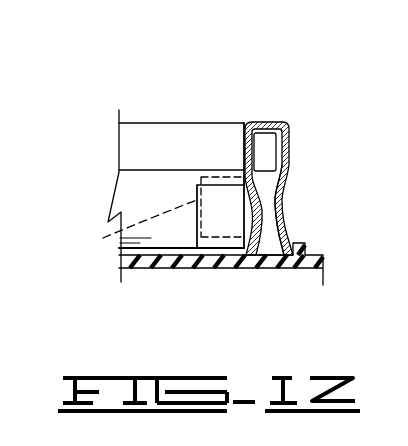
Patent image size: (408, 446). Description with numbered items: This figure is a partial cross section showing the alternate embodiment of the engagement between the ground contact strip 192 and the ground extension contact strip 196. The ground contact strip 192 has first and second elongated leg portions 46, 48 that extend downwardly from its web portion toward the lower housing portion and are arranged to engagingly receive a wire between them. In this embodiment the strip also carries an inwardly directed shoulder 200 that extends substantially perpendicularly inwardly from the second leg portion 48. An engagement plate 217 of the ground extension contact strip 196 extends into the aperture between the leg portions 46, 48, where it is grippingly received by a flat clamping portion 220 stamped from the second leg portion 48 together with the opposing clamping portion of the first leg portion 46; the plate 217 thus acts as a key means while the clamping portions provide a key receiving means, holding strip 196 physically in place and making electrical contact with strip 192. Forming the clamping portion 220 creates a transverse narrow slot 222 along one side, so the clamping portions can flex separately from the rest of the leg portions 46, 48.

The ground contact strip 192 is at (205, 118).
The ground extension contact strip 196 is at (279, 119).
The inwardly directed shoulder 200 is at (262, 153).
The first leg portion 46 is at (278, 203).
The second leg portion 48 is at (324, 250).
The flat clamping portion 220 is at (215, 207).
The engagement plate 217 is at (103, 238).
The transverse narrow slot 222 is at (197, 214).